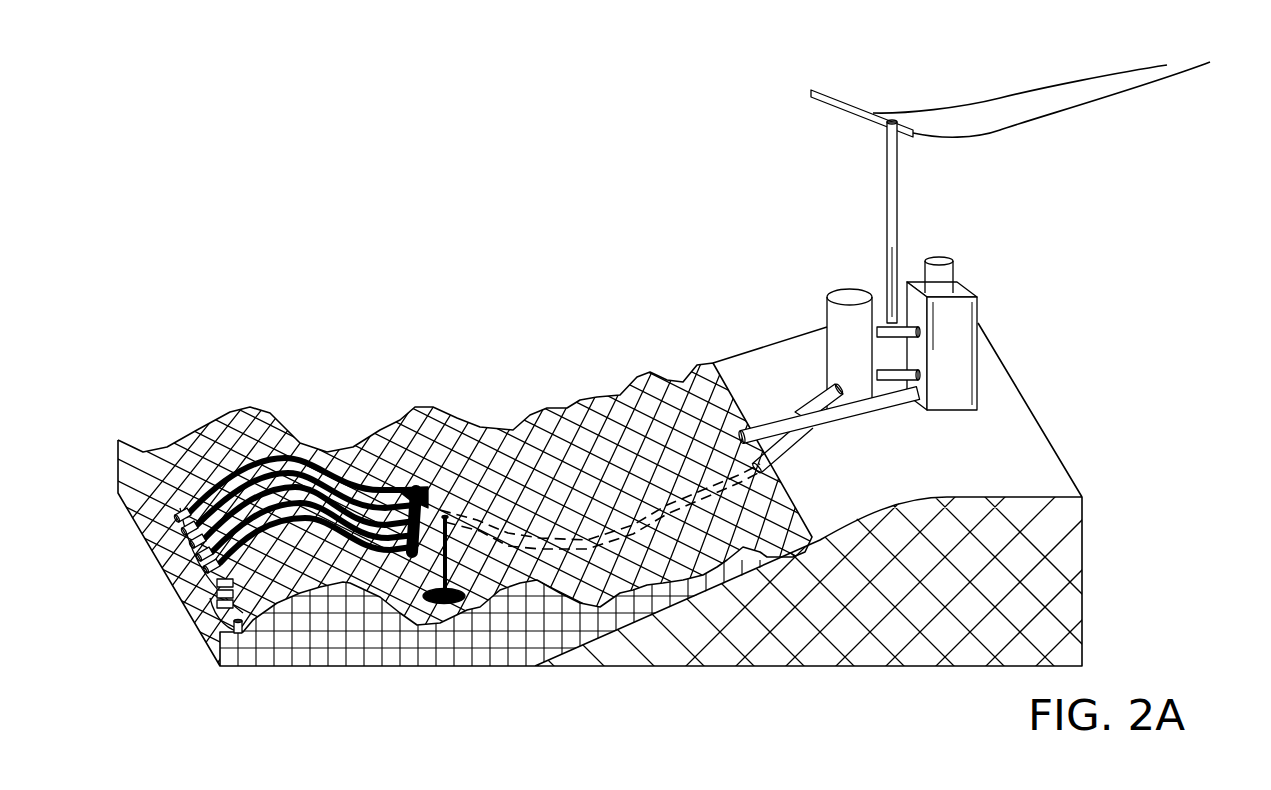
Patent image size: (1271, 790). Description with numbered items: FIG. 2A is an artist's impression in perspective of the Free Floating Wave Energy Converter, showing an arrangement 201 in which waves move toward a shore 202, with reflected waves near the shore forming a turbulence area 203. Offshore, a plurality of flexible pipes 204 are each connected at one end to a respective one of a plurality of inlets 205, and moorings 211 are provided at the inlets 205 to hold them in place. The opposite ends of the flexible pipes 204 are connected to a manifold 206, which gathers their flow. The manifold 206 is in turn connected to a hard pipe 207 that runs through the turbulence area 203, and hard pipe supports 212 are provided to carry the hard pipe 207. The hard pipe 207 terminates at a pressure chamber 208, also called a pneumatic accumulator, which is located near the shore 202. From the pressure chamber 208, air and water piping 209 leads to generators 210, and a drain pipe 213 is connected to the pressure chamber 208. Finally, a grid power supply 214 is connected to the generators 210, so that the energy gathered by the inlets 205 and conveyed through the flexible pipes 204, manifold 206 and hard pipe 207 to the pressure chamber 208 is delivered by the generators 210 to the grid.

The arrangement 201 is at (295, 229).
The shore 202 is at (748, 378).
The turbulence area 203 is at (573, 410).
The flexible pipes 204 is at (268, 412).
The inlets 205 is at (180, 494).
The manifold 206 is at (406, 480).
The hard pipe 207 is at (622, 508).
The pressure chamber 208 is at (850, 290).
The air and water piping 209 is at (880, 333).
The generators 210 is at (991, 303).
The moorings 211 is at (208, 592).
The hard pipe supports 212 is at (462, 541).
The drain pipe 213 is at (803, 422).
The grid power supply 214 is at (910, 182).